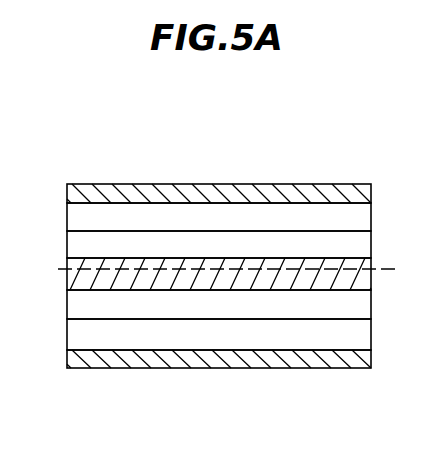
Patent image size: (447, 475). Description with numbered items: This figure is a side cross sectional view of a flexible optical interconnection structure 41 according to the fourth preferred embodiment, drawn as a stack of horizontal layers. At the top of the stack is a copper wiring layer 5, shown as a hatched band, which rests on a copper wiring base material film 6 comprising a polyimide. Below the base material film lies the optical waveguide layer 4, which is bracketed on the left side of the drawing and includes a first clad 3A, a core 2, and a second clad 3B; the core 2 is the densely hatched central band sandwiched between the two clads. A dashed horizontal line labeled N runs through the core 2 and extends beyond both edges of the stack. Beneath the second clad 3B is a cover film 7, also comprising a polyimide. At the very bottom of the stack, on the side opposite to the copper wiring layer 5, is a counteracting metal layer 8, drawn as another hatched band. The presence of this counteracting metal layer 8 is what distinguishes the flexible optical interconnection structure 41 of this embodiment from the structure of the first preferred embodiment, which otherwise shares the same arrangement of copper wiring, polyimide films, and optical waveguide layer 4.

The flexible optical interconnection structure 41 is at (85, 156).
The copper wiring layer 5 is at (369, 196).
The copper wiring base material film 6 is at (369, 222).
The first clad 3A is at (369, 249).
The core 2 is at (369, 281).
The neutral plane N is at (386, 270).
The second clad 3B is at (369, 306).
The cover film 7 is at (369, 338).
The counteracting metal layer 8 is at (369, 366).
The optical waveguide layer 4 is at (57, 231).